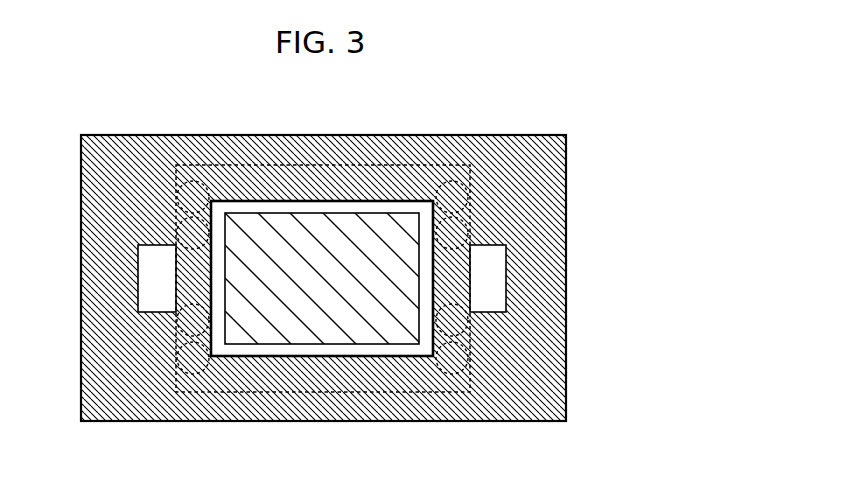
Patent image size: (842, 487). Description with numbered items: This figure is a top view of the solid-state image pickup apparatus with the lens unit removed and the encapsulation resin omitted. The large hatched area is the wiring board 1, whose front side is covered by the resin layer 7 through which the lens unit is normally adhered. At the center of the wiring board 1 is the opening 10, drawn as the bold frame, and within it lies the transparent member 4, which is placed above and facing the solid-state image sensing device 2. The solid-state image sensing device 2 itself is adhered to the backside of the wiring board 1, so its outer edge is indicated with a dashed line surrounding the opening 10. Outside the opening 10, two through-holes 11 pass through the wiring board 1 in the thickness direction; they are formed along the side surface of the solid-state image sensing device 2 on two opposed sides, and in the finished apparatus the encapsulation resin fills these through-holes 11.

The wiring board 1 is at (566, 333).
The solid-state image sensing device 2 is at (377, 163).
The transparent member 4 is at (323, 222).
The resin layer 7 is at (556, 211).
The opening 10 is at (255, 205).
The through-holes 11 is at (495, 277).